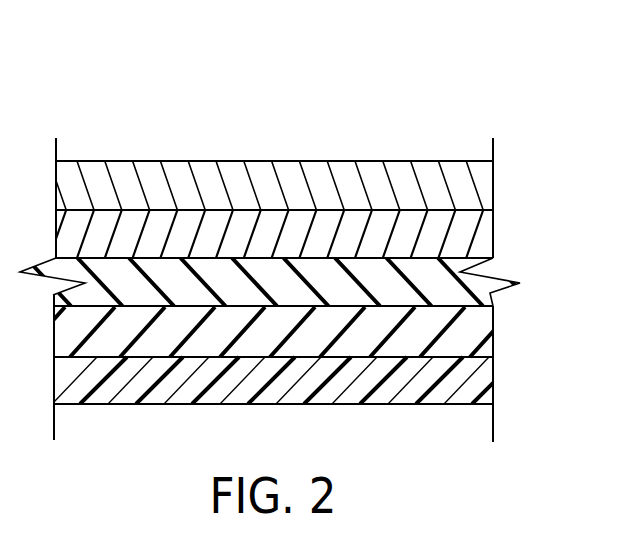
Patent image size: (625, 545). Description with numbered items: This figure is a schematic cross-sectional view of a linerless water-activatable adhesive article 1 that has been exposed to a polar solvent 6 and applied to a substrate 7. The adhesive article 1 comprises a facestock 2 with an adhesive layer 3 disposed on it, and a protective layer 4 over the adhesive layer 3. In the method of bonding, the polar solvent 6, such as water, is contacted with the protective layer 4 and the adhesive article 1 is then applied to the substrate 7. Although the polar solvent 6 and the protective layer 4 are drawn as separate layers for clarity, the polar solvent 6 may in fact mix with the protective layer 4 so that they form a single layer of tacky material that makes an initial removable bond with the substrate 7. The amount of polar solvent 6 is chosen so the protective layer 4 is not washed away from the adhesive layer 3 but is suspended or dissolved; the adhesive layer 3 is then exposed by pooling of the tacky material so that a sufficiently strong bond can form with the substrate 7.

The adhesive article 1 is at (170, 92).
The facestock 2 is at (473, 185).
The adhesive layer 3 is at (473, 232).
The protective layer 4 is at (477, 293).
The polar solvent 6 is at (473, 327).
The substrate 7 is at (473, 383).